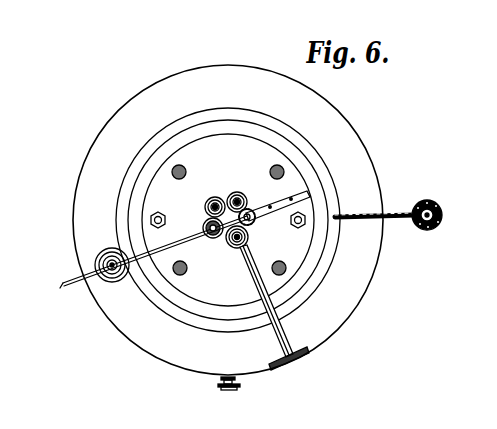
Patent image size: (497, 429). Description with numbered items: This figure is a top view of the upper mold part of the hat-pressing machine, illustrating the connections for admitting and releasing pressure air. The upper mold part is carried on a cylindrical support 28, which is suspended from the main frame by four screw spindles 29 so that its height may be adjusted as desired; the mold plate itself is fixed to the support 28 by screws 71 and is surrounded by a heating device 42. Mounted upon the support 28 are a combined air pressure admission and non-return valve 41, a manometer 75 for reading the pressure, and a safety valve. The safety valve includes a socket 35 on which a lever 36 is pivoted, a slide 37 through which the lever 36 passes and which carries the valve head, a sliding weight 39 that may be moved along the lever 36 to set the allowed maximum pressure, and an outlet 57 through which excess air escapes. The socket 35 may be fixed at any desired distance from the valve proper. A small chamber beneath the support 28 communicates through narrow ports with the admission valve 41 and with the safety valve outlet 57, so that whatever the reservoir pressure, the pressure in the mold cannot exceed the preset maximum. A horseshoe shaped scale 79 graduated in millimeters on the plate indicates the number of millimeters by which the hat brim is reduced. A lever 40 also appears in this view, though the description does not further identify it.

The cylindrical support 28 is at (205, 231).
The screw spindles 29 is at (174, 273).
The socket 35 is at (108, 141).
The lever 36 is at (181, 249).
The slide 37 is at (208, 238).
The sliding weight 39 is at (95, 265).
The lever 40 is at (236, 248).
The air pressure admission valve 41 is at (233, 193).
The heating device 42 is at (442, 210).
The outlet 57 is at (204, 224).
The screws 71 is at (150, 219).
The manometer 75 is at (208, 199).
The horseshoe shaped scale 79 is at (238, 389).